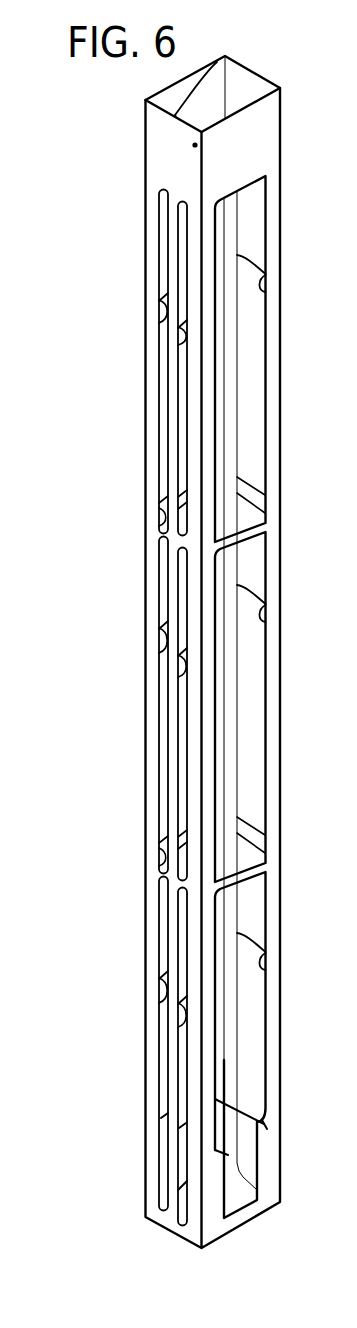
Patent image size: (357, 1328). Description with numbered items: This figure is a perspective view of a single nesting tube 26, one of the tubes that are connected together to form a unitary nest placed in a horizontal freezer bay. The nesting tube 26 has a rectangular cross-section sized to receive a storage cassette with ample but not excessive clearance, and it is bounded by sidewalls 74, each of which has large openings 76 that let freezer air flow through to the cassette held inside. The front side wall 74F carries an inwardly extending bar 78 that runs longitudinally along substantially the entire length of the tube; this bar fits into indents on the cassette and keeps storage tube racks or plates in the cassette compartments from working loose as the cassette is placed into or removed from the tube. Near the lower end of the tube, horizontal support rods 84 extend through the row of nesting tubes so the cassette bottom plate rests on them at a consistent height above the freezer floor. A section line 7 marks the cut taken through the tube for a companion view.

The nesting tube 26 is at (139, 268).
The sidewall 74 is at (268, 135).
The front side wall 74F is at (150, 212).
The large openings 76 is at (178, 325).
The inwardly extending bar 78 is at (208, 62).
The horizontal support rods 84 is at (183, 1132).
The section line 7- 7 is at (168, 127).